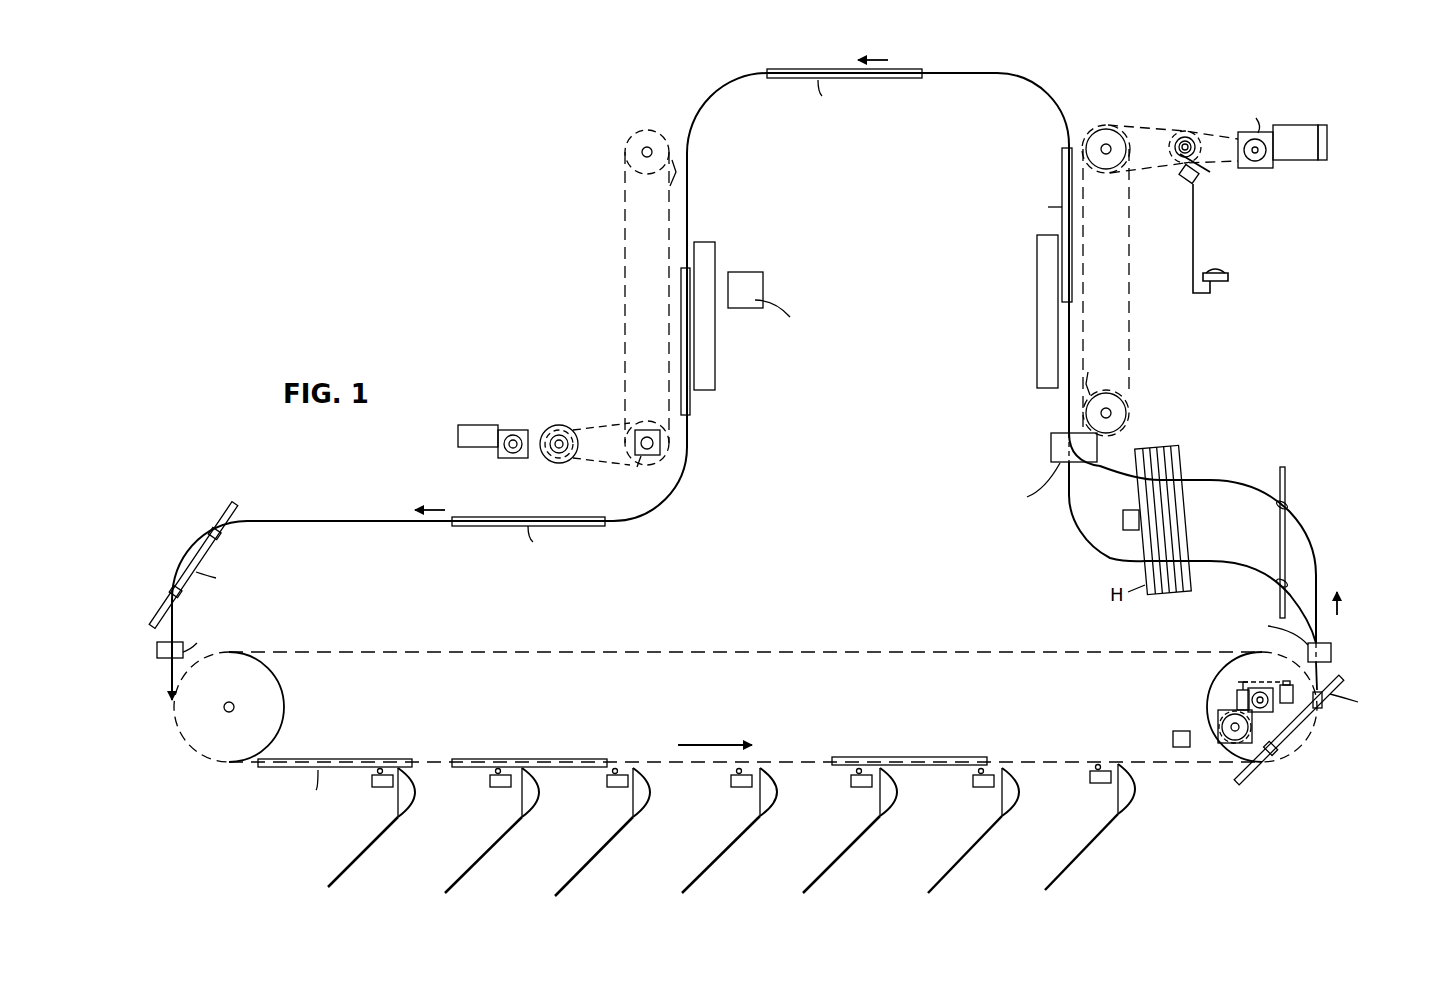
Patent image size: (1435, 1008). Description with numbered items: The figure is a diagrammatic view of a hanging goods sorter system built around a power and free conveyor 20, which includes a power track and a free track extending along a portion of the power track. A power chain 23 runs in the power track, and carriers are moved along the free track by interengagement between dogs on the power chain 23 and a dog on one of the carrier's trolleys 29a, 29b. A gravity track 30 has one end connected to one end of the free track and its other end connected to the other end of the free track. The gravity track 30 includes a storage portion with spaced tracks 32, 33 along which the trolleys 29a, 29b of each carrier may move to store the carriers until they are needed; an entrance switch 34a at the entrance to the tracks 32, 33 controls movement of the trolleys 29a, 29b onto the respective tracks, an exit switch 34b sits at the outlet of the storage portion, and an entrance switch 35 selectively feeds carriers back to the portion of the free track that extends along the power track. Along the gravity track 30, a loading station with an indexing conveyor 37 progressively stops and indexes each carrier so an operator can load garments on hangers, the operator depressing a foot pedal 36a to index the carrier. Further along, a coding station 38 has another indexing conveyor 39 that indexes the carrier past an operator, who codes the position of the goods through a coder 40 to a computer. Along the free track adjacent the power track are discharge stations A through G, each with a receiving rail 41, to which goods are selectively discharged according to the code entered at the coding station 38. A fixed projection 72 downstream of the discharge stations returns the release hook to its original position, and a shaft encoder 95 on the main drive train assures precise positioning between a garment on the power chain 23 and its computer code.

The power and free conveyor 20 is at (696, 808).
The power chain 23 is at (911, 650).
The trolley 29a is at (1290, 503).
The trolley 29b is at (1288, 583).
The gravity track 30 is at (970, 72).
The track 32 is at (1212, 481).
The track 33 is at (1210, 562).
The entrance switch 34a is at (1332, 652).
The exit switch 34b is at (1051, 455).
The entrance switch 35 is at (163, 656).
The foot pedal 36a is at (1230, 278).
The indexing conveyor 37 is at (1131, 335).
The coding station 38 is at (708, 253).
The indexing conveyor 39 is at (626, 212).
The coder 40 is at (763, 288).
The receiving rail 41 is at (370, 848).
The fixed projection 72 is at (1179, 747).
The shaft encoder 95 is at (1218, 718).